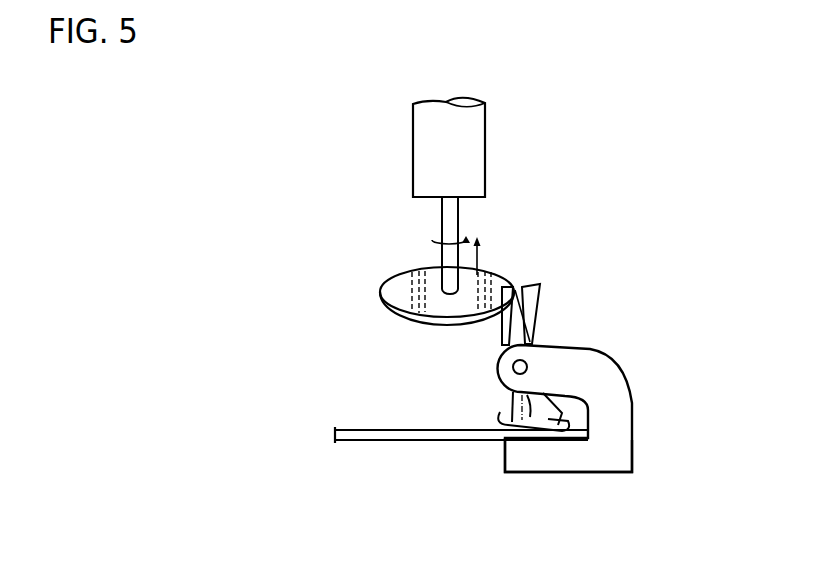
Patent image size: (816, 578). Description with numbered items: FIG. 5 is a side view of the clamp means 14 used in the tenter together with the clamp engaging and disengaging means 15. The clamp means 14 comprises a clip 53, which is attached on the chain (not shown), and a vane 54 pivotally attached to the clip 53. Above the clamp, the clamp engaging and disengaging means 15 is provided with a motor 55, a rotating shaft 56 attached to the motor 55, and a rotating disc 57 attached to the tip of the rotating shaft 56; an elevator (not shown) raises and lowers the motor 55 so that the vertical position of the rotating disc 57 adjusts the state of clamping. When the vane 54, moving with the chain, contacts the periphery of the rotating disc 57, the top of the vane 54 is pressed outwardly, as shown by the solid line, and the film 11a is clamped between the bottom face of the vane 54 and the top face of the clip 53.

The motor 55 is at (485, 158).
The rotating shaft 56 is at (443, 222).
The rotating disc 57 is at (415, 322).
The clamp engaging and disengaging means 15 is at (507, 258).
The vane 54 is at (530, 310).
The clamp means 14 is at (628, 372).
The clip 53 is at (563, 473).
The film 11a is at (393, 440).